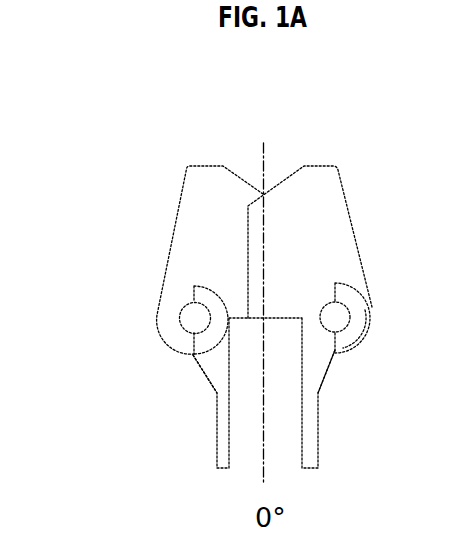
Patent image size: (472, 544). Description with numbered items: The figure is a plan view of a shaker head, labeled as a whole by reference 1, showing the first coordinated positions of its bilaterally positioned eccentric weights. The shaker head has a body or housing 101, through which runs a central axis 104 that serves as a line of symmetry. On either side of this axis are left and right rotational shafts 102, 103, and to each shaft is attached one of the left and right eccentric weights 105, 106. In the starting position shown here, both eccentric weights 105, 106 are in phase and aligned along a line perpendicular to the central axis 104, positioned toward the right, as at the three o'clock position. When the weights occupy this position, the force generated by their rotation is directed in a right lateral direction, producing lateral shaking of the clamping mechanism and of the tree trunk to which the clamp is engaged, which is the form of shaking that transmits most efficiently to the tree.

The device 1 is at (383, 170).
The body or housing 101 is at (182, 228).
The rotational shaft 102 is at (193, 318).
The rotational shaft 103 is at (336, 316).
The central axis 104 is at (270, 140).
The eccentric weight 105 is at (197, 350).
The eccentric weight 106 is at (355, 340).